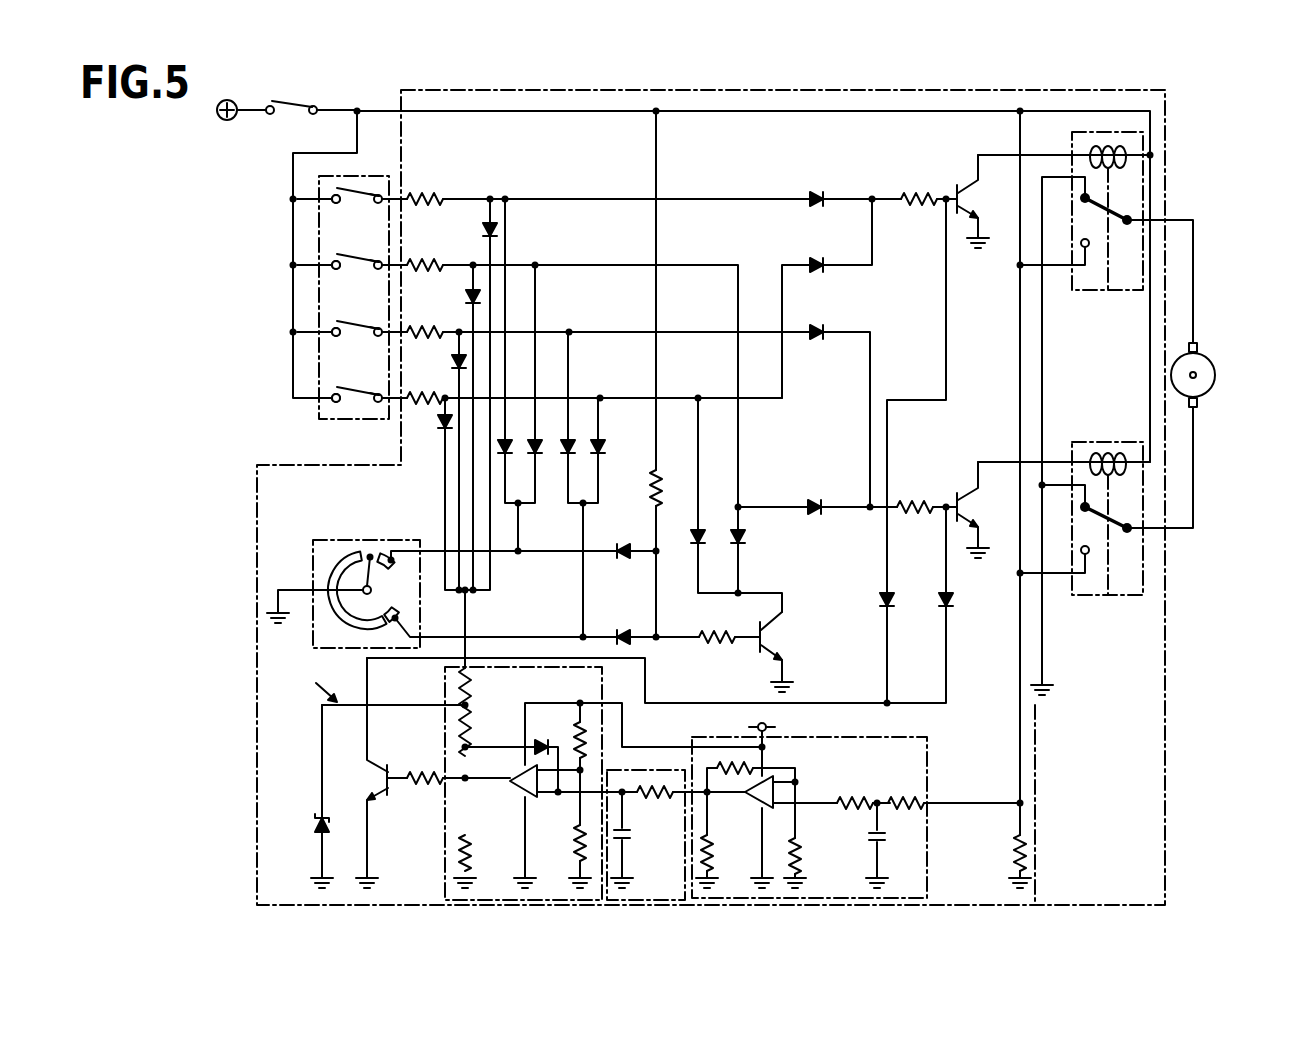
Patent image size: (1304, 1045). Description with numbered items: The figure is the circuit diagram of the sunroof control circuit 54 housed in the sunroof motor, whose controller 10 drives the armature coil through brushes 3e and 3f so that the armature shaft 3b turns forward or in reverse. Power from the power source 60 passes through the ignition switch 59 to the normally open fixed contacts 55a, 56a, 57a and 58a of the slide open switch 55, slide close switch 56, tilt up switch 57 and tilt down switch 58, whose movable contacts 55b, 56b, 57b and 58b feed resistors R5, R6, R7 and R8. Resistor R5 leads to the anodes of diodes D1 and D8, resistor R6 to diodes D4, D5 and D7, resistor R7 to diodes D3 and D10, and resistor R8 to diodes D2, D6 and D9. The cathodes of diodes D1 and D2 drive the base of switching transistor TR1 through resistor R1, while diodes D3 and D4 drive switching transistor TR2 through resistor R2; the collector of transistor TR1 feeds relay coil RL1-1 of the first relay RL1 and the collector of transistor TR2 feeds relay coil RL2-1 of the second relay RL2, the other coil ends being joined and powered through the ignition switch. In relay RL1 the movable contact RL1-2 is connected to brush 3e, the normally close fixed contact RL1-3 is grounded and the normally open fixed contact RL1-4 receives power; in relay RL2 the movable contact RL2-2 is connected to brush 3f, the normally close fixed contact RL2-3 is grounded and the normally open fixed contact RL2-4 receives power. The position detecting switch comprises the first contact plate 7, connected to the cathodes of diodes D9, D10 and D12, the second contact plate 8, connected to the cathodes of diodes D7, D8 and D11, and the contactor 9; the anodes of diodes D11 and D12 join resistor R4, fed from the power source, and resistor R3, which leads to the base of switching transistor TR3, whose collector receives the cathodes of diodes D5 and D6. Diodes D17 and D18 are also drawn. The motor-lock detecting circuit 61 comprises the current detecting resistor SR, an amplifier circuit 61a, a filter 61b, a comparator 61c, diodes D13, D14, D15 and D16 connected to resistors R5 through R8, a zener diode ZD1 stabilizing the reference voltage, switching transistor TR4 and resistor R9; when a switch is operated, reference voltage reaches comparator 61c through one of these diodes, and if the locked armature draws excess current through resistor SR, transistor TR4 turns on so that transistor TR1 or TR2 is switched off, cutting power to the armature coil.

The controller 10 is at (1167, 184).
The sunroof control circuit 54 is at (204, 313).
The power source 60 is at (227, 120).
The ignition switch 59 is at (290, 105).
The slide open switch 55 is at (357, 210).
The normally open fixed contact 55a is at (333, 203).
The movable contact 55b is at (379, 192).
The slide close switch 56 is at (357, 276).
The normally open fixed contact 56a is at (333, 269).
The movable contact 56b is at (376, 262).
The tilt up switch 57 is at (357, 342).
The normally open fixed contact 57a is at (333, 335).
The movable contact 57b is at (376, 328).
The tilt down switch 58 is at (357, 408).
The normally open fixed contact 58a is at (333, 401).
The movable contact 58b is at (376, 395).
The resistor R1 is at (918, 183).
The resistor R2 is at (915, 490).
The resistor R3 is at (717, 649).
The resistor R4 is at (670, 488).
The resistor R5 is at (425, 187).
The resistor R6 is at (425, 253).
The resistor R7 is at (425, 320).
The resistor R8 is at (425, 386).
The resistor R9 is at (425, 761).
The diode D1 is at (820, 183).
The diode D2 is at (822, 249).
The diode D3 is at (822, 316).
The diode D4 is at (817, 491).
The diode D5 is at (755, 538).
The diode D6 is at (710, 519).
The diode D7 is at (537, 438).
The diode D8 is at (510, 462).
The diode D9 is at (602, 438).
The diode D10 is at (570, 438).
The diode D11 is at (622, 570).
The diode D12 is at (622, 616).
The diode D13 is at (471, 224).
The diode D14 is at (455, 287).
The diode D15 is at (443, 353).
The diode D16 is at (428, 439).
The diode D17 is at (903, 588).
The diode D18 is at (962, 588).
The switching transistor TR1 is at (983, 196).
The switching transistor TR2 is at (985, 505).
The switching transistor TR3 is at (791, 647).
The switching transistor TR4 is at (357, 768).
The first relay RL1 is at (1107, 226).
The relay coil RL1-1 is at (1088, 150).
The movable contact RL1-2 is at (1130, 222).
The normally close fixed contact RL1-3 is at (1085, 198).
The normally open fixed contact RL1-4 is at (1080, 246).
The second relay RL2 is at (1107, 534).
The relay coil RL2-1 is at (1111, 455).
The movable contact RL2-2 is at (1130, 530).
The normally close fixed contact RL2-3 is at (1082, 505).
The normally open fixed contact RL2-4 is at (1080, 553).
The armature shaft 3b is at (1216, 375).
The brush 3e is at (1208, 350).
The brush 3f is at (1208, 400).
The first contact plate 7 is at (398, 616).
The second contact plate 8 is at (388, 553).
The contactor 9 is at (370, 557).
The motor-lock detecting circuit 61 is at (312, 680).
The amplifier circuit 61a is at (928, 752).
The filter 61b is at (655, 770).
The comparator 61c is at (445, 840).
The zener diode ZD1 is at (301, 791).
The current detecting resistor SR is at (1034, 853).